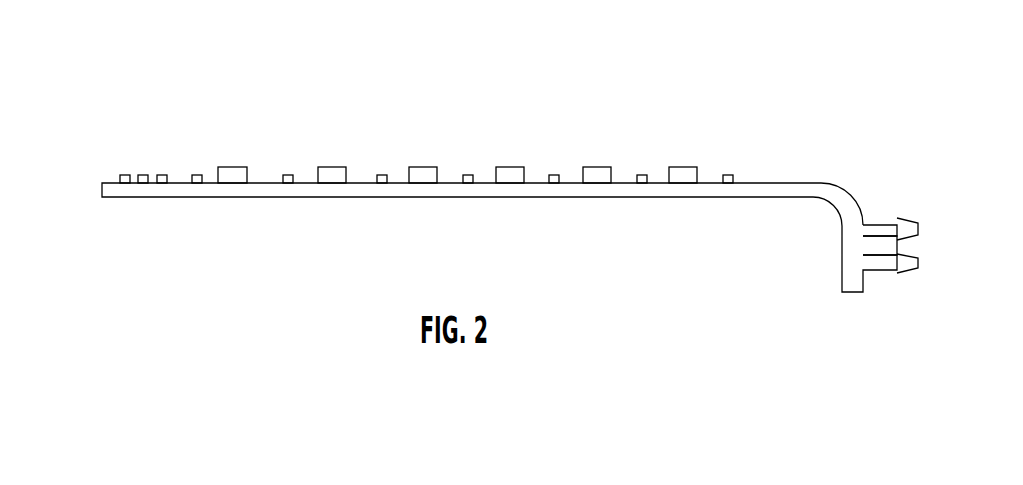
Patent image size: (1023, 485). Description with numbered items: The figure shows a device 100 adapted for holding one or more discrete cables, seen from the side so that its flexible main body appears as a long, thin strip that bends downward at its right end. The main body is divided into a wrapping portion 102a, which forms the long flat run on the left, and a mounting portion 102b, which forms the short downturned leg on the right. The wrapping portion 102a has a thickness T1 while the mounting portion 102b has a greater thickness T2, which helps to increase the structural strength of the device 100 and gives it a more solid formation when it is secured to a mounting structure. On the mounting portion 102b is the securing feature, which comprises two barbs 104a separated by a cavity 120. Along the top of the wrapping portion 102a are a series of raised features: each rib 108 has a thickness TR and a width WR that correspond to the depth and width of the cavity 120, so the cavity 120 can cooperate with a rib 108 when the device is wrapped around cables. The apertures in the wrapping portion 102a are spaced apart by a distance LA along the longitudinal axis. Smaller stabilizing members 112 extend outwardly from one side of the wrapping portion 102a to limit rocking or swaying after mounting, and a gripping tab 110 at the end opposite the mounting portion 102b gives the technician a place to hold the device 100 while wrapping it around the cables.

The device 100 is at (823, 70).
The wrapping portion 102a is at (368, 187).
The mounting portion 102b is at (840, 254).
The barbs 104a is at (915, 225).
The rib 108 is at (233, 171).
The gripping tab 110 is at (128, 175).
The stabilizing members 112 is at (383, 175).
The cavity 120 is at (888, 246).
The rib thickness TR is at (257, 213).
The rib width WR is at (369, 160).
The aperture spacing distance LA is at (597, 165).
The wrapping portion thickness T1 is at (770, 183).
The mounting portion thickness T2 is at (809, 213).